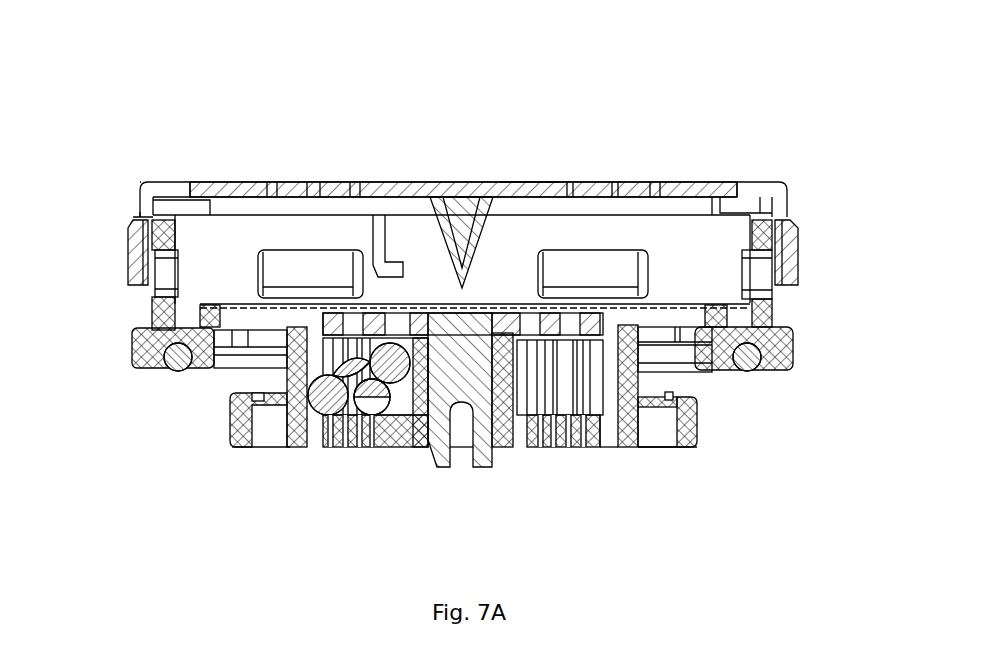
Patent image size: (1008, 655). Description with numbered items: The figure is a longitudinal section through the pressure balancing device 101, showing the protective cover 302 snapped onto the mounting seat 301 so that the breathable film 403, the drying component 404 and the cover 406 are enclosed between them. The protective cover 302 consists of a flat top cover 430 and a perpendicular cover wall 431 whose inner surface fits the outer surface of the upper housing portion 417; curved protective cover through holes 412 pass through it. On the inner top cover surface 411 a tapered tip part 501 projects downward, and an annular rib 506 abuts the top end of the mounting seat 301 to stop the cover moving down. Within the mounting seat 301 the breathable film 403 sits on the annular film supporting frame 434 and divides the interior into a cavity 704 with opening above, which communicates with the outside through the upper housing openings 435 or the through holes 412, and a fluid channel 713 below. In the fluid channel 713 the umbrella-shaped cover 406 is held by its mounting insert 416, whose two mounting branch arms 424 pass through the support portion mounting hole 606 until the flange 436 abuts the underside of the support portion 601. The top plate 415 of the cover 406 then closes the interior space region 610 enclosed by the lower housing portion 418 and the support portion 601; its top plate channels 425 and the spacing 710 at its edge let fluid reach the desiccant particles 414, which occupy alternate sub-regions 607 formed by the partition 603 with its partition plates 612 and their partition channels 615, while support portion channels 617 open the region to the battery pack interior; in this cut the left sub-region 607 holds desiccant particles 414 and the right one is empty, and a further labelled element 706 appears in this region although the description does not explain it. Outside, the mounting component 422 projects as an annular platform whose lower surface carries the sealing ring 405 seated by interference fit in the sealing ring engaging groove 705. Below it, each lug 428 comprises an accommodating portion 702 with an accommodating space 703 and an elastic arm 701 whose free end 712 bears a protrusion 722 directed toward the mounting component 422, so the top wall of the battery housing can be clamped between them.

The pressure balancing device 101 is at (182, 107).
The cavity with opening 704 is at (285, 235).
The rib 506 is at (330, 207).
The tip part 501 is at (452, 205).
The top cover 430 is at (535, 182).
The protective cover 302 is at (600, 190).
The inner top cover surface 411 is at (697, 198).
The protective cover through hole 412 is at (760, 188).
The cover wall 431 is at (133, 243).
The mounting seat 301 is at (153, 318).
The film supporting frame 434 is at (203, 297).
The desiccant particles 414 is at (353, 317).
The top plate channel 425 is at (350, 315).
The top plate 415 is at (423, 313).
The cover 406 is at (487, 317).
The spacing 710 is at (607, 333).
The breathable film 403 is at (673, 302).
The upper housing opening 435 is at (755, 280).
The upper housing portion 417 is at (773, 303).
The mounting component 422 is at (755, 345).
The sealing ring engaging groove 705 is at (763, 370).
The sealing ring 405 is at (187, 373).
The interior space region 610 is at (287, 388).
The accommodating portion 702 is at (230, 430).
The elastic arm 701 is at (267, 433).
The accommodating space 703 is at (267, 450).
The lower housing portion 418 is at (275, 433).
The drying component 404 is at (313, 440).
The support portion mounting hole 606 is at (345, 440).
The support portion channel 617 is at (313, 453).
The cage wall 706 is at (373, 448).
The mounting branch arm 424 is at (463, 450).
The mounting insert 416 is at (462, 448).
The flange 436 is at (495, 448).
The partition 603 is at (530, 405).
The support portion 601 is at (527, 448).
The partition channel 615 is at (597, 398).
The partition plate 612 is at (615, 448).
The sub-region 607 is at (600, 430).
The fluid channel 713 is at (647, 383).
The protrusion 722 is at (673, 398).
The lug 428 is at (690, 437).
The free end 712 is at (697, 448).